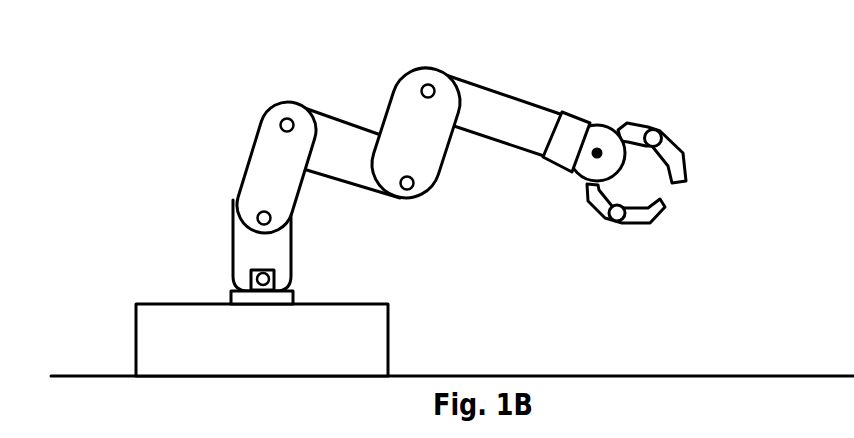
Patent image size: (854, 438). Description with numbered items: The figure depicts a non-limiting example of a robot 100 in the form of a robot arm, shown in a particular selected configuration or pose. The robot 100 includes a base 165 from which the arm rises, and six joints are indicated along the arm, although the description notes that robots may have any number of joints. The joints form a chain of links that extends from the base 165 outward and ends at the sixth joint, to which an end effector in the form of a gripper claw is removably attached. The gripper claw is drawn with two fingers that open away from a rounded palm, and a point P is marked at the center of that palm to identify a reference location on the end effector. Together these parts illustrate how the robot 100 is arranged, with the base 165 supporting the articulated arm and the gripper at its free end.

The robot 100 is at (100, 128).
The reference point of end effector P is at (597, 147).
The base 165 is at (333, 303).